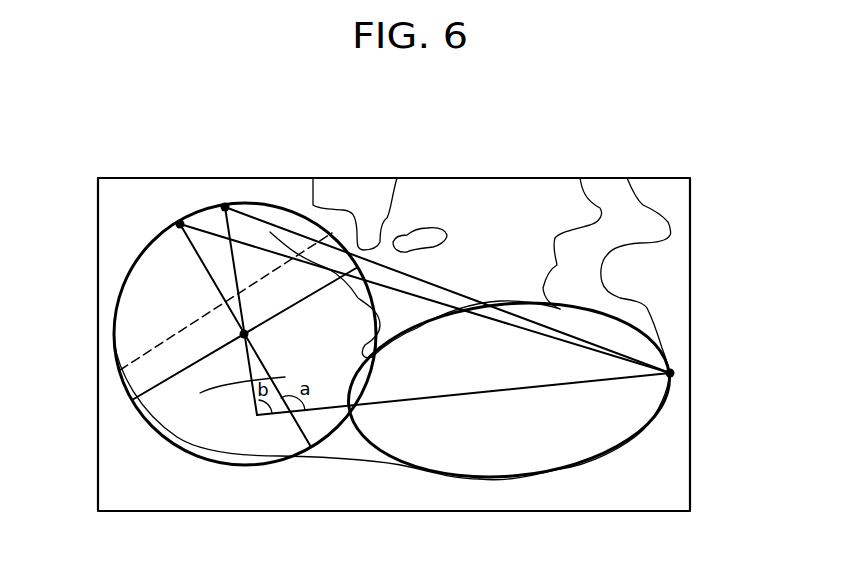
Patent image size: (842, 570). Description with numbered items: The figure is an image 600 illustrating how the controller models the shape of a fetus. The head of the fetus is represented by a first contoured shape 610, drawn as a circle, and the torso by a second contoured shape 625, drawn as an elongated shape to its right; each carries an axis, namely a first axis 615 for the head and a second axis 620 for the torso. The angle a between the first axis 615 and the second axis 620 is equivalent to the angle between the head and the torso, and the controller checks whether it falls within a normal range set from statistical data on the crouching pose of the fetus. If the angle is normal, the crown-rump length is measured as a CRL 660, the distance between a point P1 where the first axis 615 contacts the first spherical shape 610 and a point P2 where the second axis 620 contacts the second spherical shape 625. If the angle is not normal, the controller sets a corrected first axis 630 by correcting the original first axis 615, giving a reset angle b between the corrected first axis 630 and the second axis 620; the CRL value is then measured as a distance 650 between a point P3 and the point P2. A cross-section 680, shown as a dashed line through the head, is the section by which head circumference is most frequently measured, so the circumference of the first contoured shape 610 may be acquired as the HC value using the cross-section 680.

The image 600 is at (540, 178).
The first contoured shape 610 is at (203, 463).
The first axis 615 is at (120, 373).
The second axis 620 is at (454, 398).
The second contoured shape 625 is at (542, 473).
The corrected first axis 630 is at (200, 393).
The distance 650 is at (303, 237).
The CRL 660 is at (408, 287).
The cross-section 680 is at (187, 322).
The point of contact P1 is at (180, 224).
The point of contact P2 is at (670, 373).
The point P3 is at (225, 207).